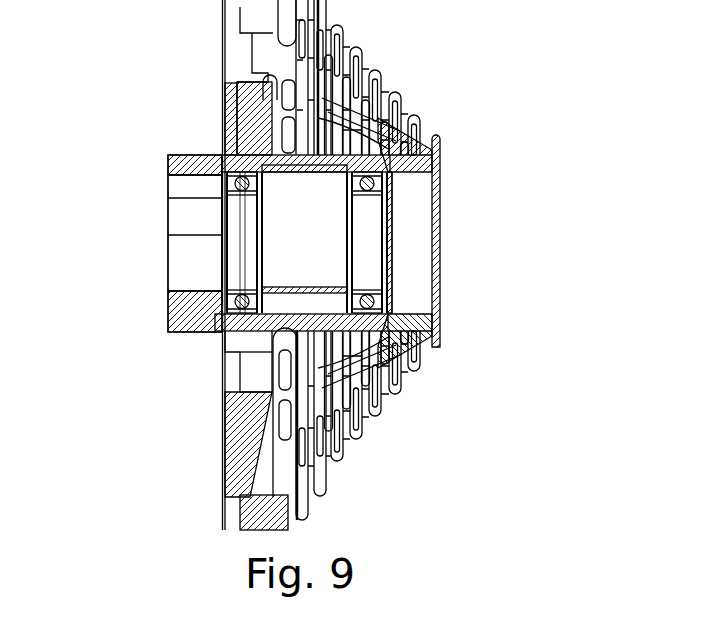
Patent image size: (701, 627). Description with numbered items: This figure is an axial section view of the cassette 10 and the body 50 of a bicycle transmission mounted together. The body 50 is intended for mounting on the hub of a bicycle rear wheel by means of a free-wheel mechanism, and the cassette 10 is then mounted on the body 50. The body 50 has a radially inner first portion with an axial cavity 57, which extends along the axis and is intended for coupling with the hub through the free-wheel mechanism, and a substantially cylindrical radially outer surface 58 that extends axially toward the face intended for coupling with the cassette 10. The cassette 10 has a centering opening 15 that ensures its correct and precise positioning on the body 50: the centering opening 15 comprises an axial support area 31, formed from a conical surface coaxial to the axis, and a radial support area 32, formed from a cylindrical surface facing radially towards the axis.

The cassette 10 is at (398, 475).
The centering opening 15 is at (418, 272).
The axial support area 31 is at (413, 152).
The radial support area 32 is at (393, 143).
The body 50 is at (160, 149).
The axial cavity 57 is at (193, 262).
The radially outer surface 58 is at (380, 117).